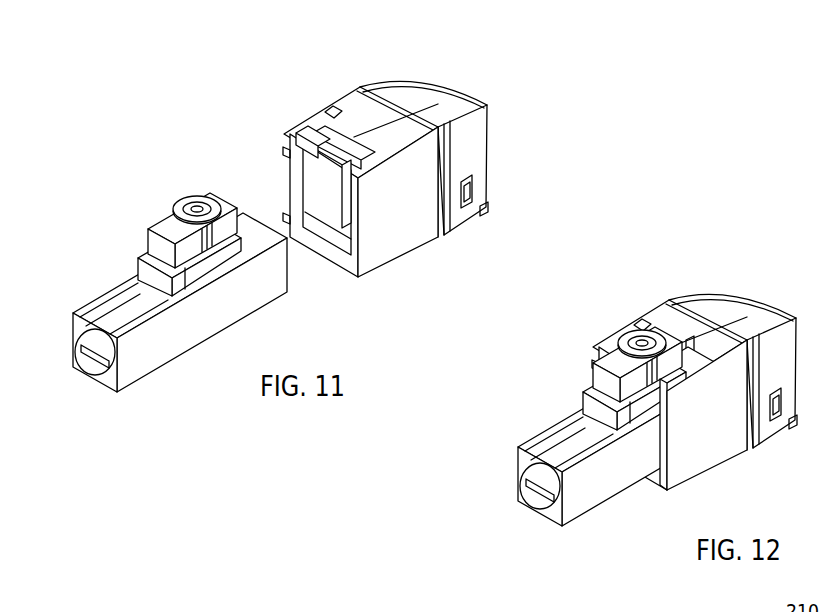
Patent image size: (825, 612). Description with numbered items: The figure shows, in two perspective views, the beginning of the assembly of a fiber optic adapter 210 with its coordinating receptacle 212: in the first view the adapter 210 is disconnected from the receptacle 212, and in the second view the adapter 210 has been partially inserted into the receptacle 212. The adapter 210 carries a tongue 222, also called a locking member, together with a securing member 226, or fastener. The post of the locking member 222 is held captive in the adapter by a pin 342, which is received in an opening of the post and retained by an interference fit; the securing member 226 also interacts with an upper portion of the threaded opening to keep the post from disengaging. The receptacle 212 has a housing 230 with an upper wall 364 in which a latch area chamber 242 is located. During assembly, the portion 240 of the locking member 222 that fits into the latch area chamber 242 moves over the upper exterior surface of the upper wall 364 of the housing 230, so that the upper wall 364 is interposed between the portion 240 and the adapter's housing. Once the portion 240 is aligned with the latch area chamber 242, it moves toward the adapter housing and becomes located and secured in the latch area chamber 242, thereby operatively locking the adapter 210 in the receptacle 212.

In FIG. 11, the fiber optic adapter 210 is at (89, 260).
In FIG. 12, the fiber optic adapter 210 is at (516, 426).
In FIG. 11, the receptacle 212 is at (412, 258).
In FIG. 12, the receptacle 212 is at (723, 468).
In FIG. 11, the tongue 222 is at (165, 228).
In FIG. 12, the tongue 222 is at (605, 357).
In FIG. 11, the securing member 226 is at (205, 212).
In FIG. 12, the securing member 226 is at (622, 337).
In FIG. 11, the portion of the locking member 240 is at (195, 203).
In FIG. 12, the portion of the locking member 240 is at (638, 322).
In FIG. 11, the latch area chamber 242 is at (342, 125).
In FIG. 12, the latch area chamber 242 is at (690, 352).
In FIG. 11, the pin 342 is at (312, 140).
In FIG. 11, the upper wall 364 is at (350, 165).
In FIG. 11, the housing 230 is at (380, 233).
In FIG. 12, the housing 230 is at (682, 462).